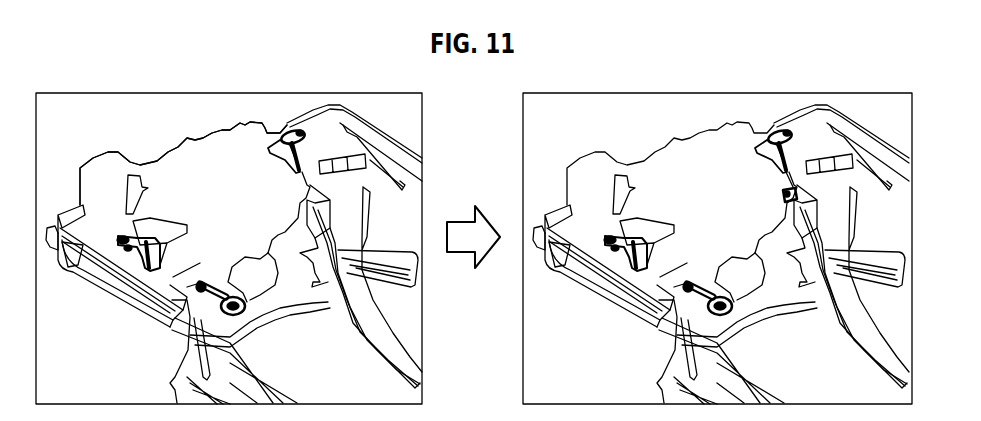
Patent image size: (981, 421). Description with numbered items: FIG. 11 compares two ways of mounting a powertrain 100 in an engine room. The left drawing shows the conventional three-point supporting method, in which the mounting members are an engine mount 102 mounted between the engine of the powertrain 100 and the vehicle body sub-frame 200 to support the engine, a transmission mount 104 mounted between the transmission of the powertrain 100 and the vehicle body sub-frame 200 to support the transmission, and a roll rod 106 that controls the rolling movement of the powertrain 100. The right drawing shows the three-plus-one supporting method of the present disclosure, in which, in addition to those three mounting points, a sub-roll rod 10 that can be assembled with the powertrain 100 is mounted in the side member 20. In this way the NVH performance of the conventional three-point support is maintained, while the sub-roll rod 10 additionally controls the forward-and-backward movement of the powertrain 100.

The powertrain 100 is at (168, 152).
The engine mount 102 is at (285, 127).
The transmission mount 104 is at (122, 288).
The roll rod 106 is at (250, 308).
The vehicle body sub-frame 200 is at (148, 298).
The sub-roll rod 10 is at (845, 137).
The side member 20 is at (845, 197).